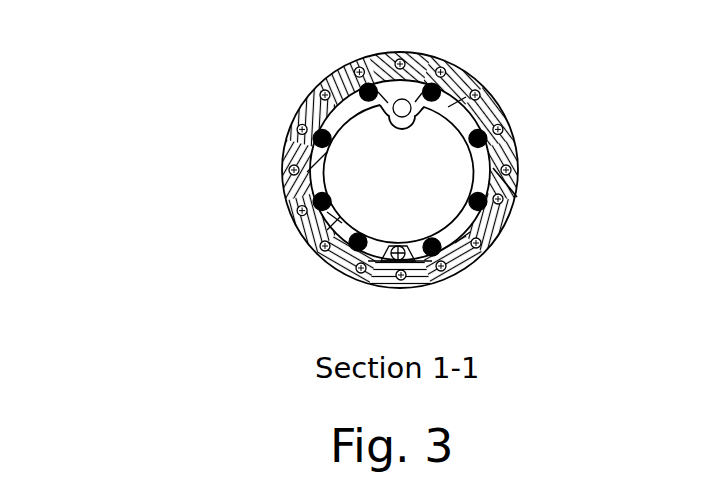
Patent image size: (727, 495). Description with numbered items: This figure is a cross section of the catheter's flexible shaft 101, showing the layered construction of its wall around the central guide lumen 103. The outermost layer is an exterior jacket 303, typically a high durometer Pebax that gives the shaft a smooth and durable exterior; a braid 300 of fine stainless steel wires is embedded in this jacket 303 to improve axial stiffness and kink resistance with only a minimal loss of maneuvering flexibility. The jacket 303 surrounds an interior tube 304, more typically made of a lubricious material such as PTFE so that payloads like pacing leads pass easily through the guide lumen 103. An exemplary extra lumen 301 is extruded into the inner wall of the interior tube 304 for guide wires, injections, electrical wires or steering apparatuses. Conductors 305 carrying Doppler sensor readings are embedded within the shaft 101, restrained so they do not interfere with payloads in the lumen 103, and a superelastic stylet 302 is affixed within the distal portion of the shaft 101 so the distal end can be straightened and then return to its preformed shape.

The flexible shaft 101 is at (273, 169).
The guide lumen 103 is at (287, 174).
The braid 300 is at (331, 152).
The extra lumen 301 is at (460, 58).
The stylet 302 is at (492, 318).
The exterior jacket 303 is at (561, 235).
The interior tube 304 is at (464, 170).
The conductors 305 is at (447, 169).